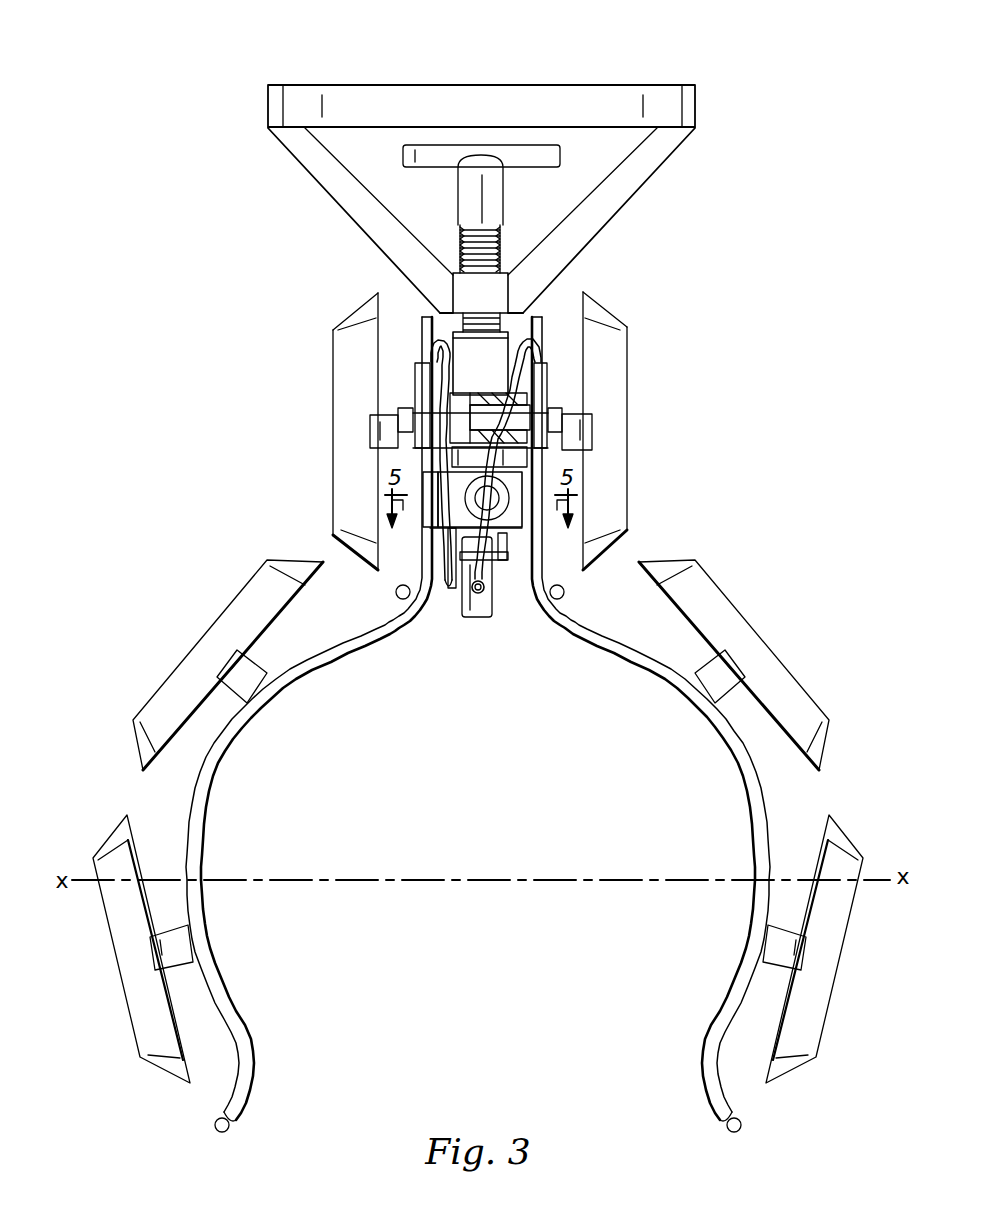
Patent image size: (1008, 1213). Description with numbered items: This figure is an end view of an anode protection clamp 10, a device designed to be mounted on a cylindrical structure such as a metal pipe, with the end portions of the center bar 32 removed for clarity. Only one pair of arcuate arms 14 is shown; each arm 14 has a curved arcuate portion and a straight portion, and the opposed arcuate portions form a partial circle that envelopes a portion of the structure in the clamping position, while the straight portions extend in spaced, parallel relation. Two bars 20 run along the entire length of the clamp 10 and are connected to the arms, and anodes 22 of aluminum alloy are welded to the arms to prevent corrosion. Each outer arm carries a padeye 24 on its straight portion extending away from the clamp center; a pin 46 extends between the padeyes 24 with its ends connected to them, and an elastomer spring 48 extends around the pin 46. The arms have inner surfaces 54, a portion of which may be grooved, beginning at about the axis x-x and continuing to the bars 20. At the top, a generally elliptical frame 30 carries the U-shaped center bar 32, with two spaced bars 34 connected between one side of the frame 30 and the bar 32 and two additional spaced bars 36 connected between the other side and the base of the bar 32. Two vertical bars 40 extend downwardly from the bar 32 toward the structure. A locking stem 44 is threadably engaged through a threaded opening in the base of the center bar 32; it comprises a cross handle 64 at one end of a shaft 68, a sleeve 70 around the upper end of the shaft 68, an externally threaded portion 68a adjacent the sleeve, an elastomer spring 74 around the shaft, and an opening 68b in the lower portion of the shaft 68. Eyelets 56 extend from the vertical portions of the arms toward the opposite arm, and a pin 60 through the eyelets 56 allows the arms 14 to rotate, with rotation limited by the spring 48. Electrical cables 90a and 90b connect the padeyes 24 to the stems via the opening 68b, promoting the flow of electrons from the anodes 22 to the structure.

The anode protection clamp 10 is at (782, 246).
The arcuate arms 14 is at (478, 705).
The bars 20 is at (399, 604).
The anodes 22 is at (332, 448).
The padeye 24 is at (478, 705).
The frame 30 is at (410, 80).
The center bar 32 is at (500, 285).
The spaced bars 34 is at (652, 188).
The additional spaced bars 36 is at (310, 192).
The vertical bars 40 is at (505, 609).
The locking element or stem 44 is at (456, 156).
The pin 46 is at (553, 407).
The elastomer spring 48 is at (487, 394).
The inner surfaces 54 is at (231, 1002).
The eyelets 56 is at (427, 517).
The pin 60 is at (400, 528).
The cross handle 64 is at (420, 148).
The shaft 68 is at (492, 575).
The externally threaded portion 68a is at (500, 238).
The opening 68b is at (483, 595).
The sleeve 70 is at (470, 193).
The elastomer spring 74 is at (455, 373).
The electrical cable 90a is at (530, 365).
The electrical cable 90b is at (448, 584).